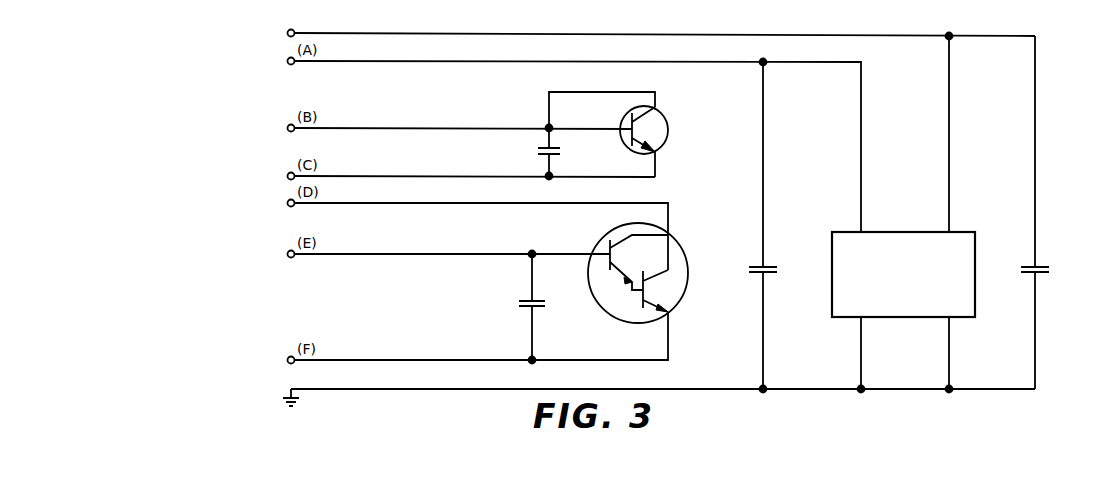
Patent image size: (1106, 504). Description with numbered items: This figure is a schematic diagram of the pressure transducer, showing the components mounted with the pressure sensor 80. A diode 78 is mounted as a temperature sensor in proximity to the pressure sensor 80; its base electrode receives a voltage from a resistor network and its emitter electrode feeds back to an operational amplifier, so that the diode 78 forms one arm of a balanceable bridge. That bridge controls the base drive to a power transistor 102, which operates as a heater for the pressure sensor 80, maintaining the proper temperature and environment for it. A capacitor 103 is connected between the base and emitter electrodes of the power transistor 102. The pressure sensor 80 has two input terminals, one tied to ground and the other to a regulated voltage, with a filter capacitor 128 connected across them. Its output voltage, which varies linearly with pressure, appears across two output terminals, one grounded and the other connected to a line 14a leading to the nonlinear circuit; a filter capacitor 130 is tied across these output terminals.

The line 14a is at (443, 33).
The diode 78 is at (659, 128).
The pressure sensor 80 is at (910, 265).
The power transistor 102 is at (682, 277).
The capacitor 103 is at (524, 309).
The filter capacitor 128 is at (768, 264).
The filter capacitor 130 is at (1042, 263).